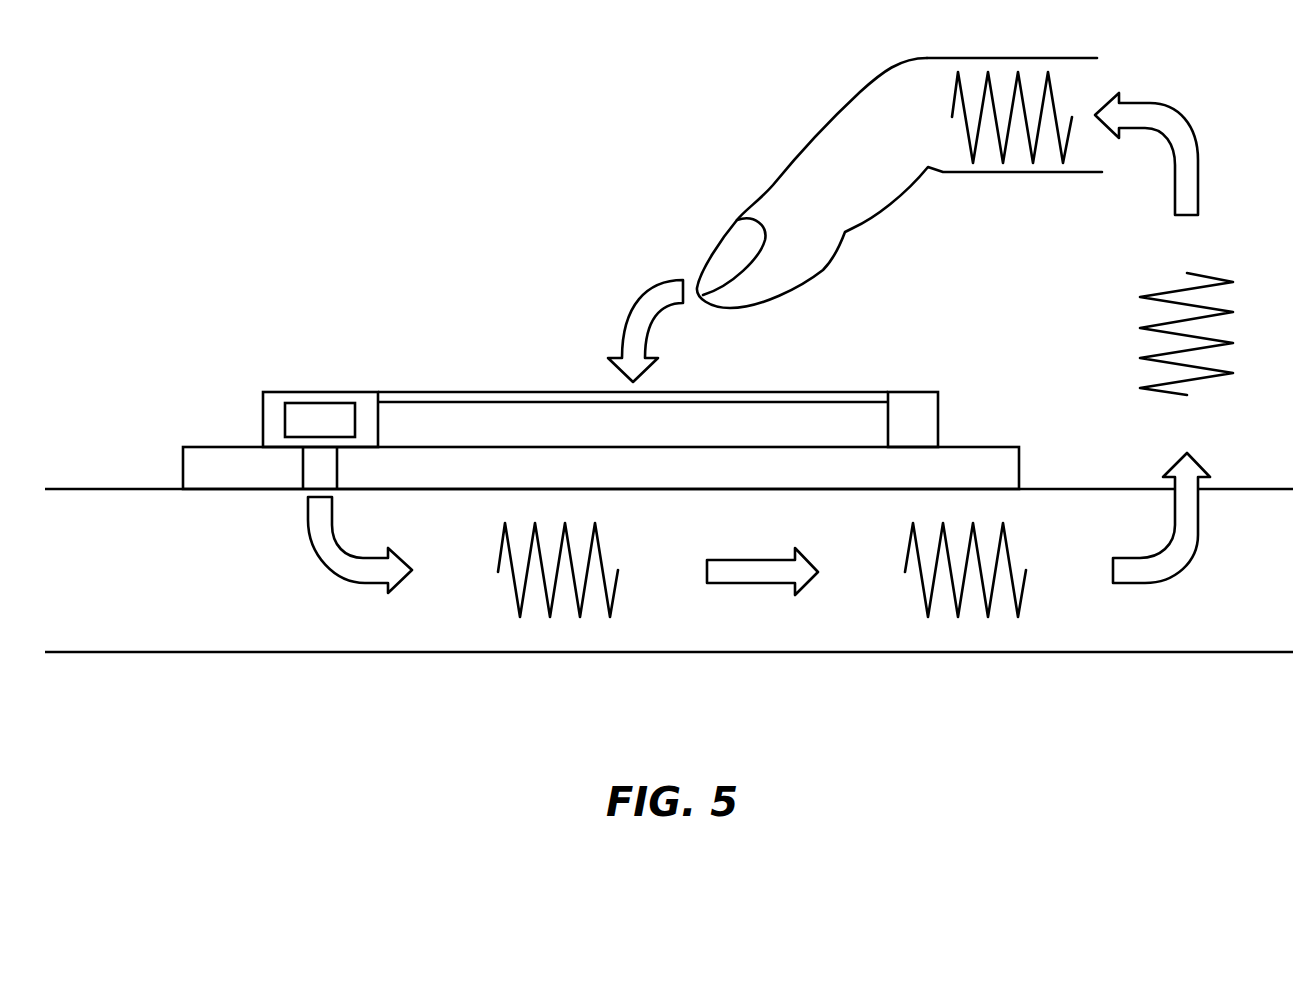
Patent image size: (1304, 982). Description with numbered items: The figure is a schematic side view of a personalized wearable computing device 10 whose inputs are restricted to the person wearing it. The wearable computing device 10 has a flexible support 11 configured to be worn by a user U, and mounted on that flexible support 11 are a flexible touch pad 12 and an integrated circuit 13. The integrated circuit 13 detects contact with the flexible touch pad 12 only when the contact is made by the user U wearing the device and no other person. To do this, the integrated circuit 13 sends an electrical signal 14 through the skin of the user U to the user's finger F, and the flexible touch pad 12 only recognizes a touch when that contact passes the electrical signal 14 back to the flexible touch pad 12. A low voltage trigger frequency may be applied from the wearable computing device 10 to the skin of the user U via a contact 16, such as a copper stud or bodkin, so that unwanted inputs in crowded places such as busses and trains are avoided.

The wearable computing device 10 is at (601, 442).
The flexible support 11 is at (940, 413).
The flexible touch pad 12 is at (492, 391).
The integrated circuit 13 is at (321, 402).
The electrical signal 14 is at (1170, 130).
The contact 16 is at (315, 469).
The finger F is at (858, 122).
The user U is at (872, 625).